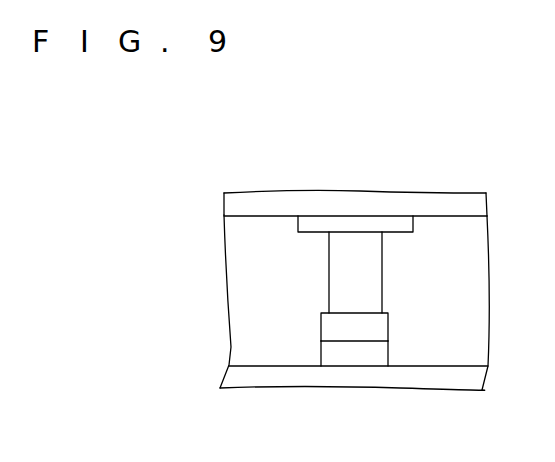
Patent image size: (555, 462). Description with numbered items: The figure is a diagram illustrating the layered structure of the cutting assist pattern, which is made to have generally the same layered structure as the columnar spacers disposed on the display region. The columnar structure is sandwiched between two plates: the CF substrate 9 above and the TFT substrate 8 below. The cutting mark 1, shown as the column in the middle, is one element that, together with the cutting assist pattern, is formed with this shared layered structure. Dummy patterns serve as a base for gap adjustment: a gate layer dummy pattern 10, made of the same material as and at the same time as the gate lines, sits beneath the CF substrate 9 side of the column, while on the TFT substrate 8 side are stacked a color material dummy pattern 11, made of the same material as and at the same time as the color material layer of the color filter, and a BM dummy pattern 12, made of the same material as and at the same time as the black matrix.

The CF substrate 9 is at (360, 190).
The TFT substrate 8 is at (358, 376).
The gate layer dummy pattern 10 is at (392, 226).
The cutting mark 1 is at (368, 287).
The color material dummy pattern 11 is at (378, 328).
The BM dummy pattern 12 is at (378, 353).